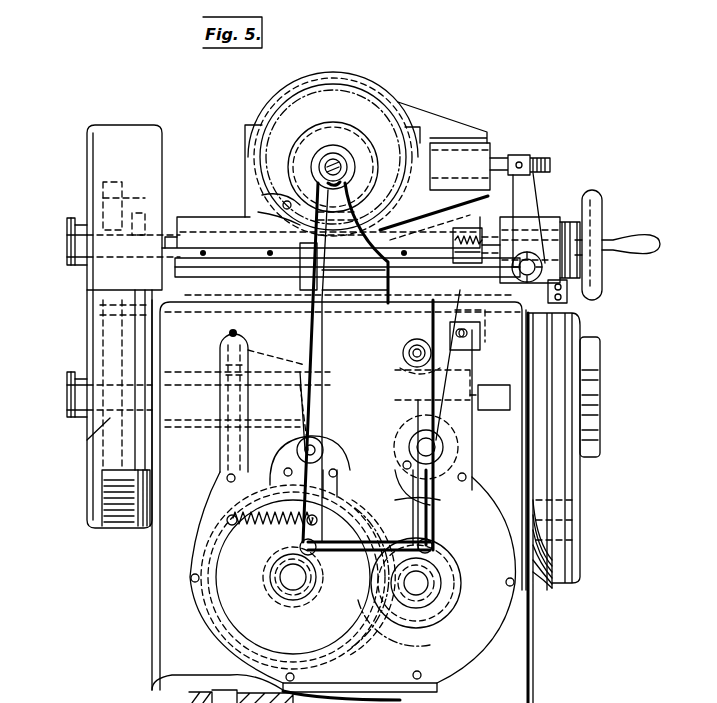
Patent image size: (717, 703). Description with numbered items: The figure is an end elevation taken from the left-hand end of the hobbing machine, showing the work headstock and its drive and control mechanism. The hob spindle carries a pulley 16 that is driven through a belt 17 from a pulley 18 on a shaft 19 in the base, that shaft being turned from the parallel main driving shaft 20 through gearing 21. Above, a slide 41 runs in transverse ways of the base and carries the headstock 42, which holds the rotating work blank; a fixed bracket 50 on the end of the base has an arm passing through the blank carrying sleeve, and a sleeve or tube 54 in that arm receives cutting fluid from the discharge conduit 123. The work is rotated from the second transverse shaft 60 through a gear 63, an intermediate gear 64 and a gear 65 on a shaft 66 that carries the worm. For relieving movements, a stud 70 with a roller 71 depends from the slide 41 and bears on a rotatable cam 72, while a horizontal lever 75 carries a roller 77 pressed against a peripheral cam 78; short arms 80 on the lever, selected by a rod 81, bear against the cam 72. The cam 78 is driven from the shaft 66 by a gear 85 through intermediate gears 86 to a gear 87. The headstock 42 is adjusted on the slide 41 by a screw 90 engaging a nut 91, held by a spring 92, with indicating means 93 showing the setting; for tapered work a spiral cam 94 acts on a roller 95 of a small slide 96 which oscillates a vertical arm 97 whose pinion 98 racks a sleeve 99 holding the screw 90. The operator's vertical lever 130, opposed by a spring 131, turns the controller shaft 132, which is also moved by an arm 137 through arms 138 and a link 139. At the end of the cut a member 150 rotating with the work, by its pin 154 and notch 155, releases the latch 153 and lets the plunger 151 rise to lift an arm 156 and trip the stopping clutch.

The pulley 16 is at (346, 140).
The belt 17 is at (200, 537).
The pulley 18 is at (216, 622).
The shaft 19 is at (283, 579).
The parallel shaft 20 is at (418, 586).
The gearing 21 is at (384, 605).
The slide 41 is at (222, 282).
The headstock 42 is at (197, 215).
The fixed bracket 50 is at (336, 146).
The sleeve or tube 54 is at (330, 160).
The second transverse shaft 60 is at (68, 400).
The gear 63 is at (78, 440).
The intermediate gear 64 is at (108, 335).
The gear 65 is at (113, 200).
The shaft 66 is at (68, 240).
The stud 70 is at (478, 320).
The roller 71 is at (482, 340).
The rotatable cam 72 is at (470, 380).
The lever 75 is at (285, 348).
The roller 77 is at (228, 347).
The rotatable cam 78 is at (226, 440).
The short arms 80 is at (400, 368).
The rod 81 is at (490, 397).
The gear 85 is at (198, 217).
The intermediate gears 86 is at (100, 307).
The gear 87 is at (125, 462).
The screw 90 is at (492, 232).
The nut 91 is at (466, 235).
The spring 92 is at (563, 508).
The indicating means 93 is at (560, 215).
The cam 94 is at (455, 186).
The roller 95 is at (445, 143).
The slide 96 is at (487, 163).
The arm 97 is at (523, 193).
The pinion 98 is at (567, 291).
The sleeve 99 is at (585, 262).
The discharge conduit 123 is at (325, 185).
The vertical lever 130 is at (302, 370).
The spring 131 is at (262, 525).
The controller shaft 132 is at (298, 452).
The arm 137 is at (445, 445).
The arms 138 is at (410, 478).
The link 139 is at (345, 553).
The member 150 is at (280, 126).
The plunger 151 is at (403, 350).
The latch 153 is at (392, 283).
The pin 154 is at (280, 196).
The notch 155 is at (268, 208).
The arm 156 is at (448, 450).